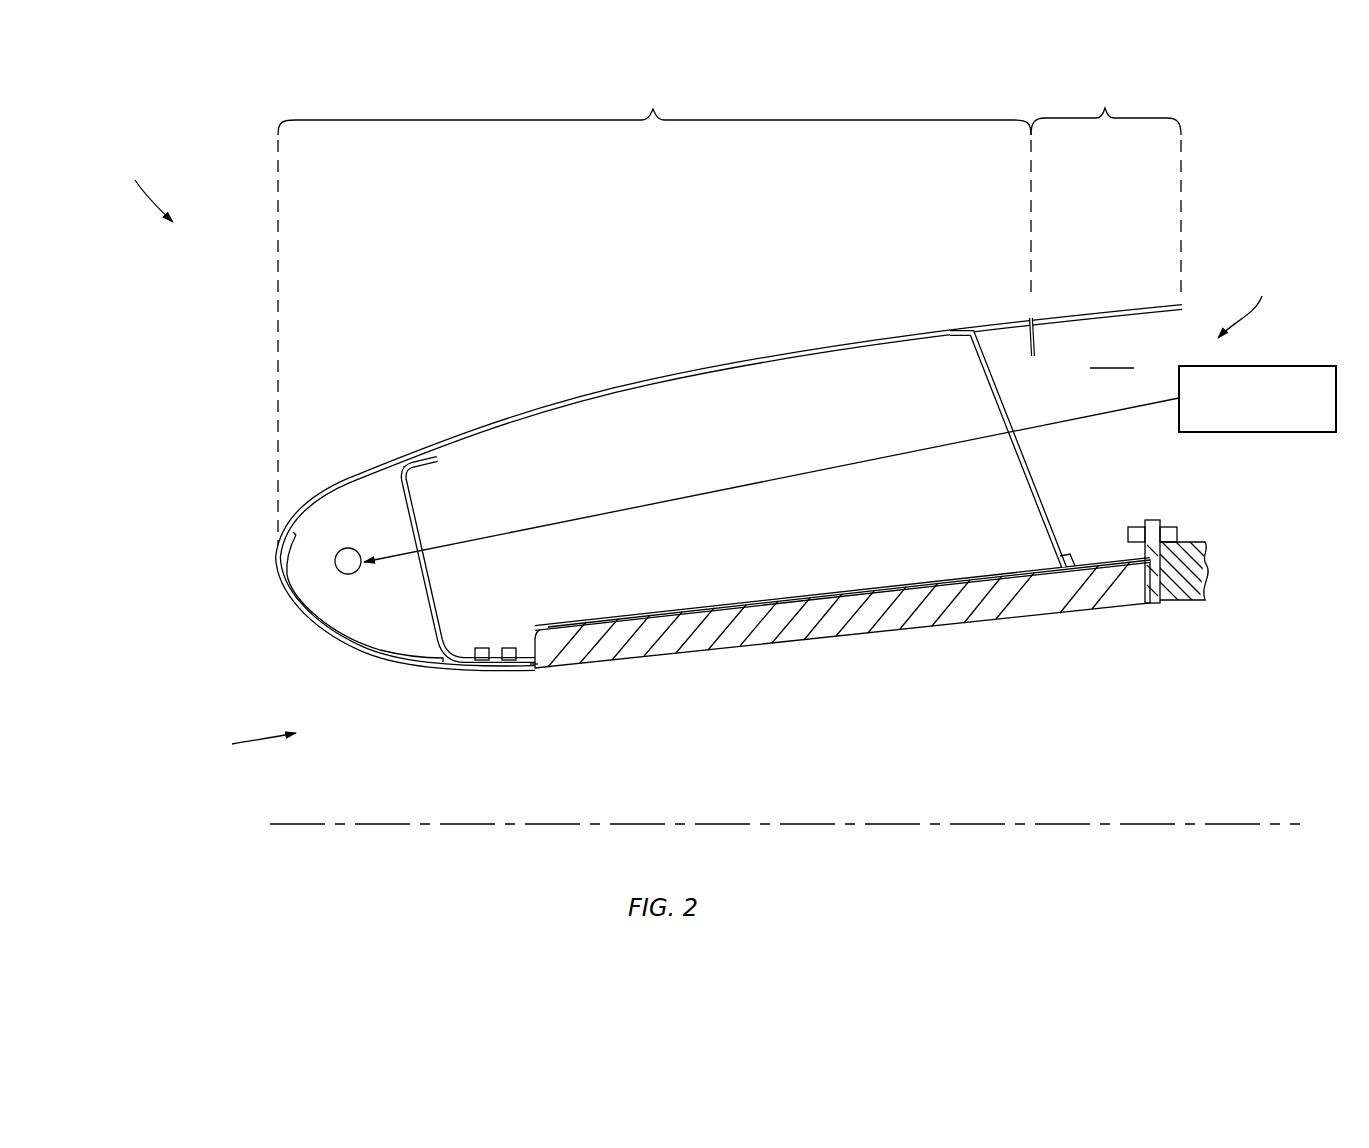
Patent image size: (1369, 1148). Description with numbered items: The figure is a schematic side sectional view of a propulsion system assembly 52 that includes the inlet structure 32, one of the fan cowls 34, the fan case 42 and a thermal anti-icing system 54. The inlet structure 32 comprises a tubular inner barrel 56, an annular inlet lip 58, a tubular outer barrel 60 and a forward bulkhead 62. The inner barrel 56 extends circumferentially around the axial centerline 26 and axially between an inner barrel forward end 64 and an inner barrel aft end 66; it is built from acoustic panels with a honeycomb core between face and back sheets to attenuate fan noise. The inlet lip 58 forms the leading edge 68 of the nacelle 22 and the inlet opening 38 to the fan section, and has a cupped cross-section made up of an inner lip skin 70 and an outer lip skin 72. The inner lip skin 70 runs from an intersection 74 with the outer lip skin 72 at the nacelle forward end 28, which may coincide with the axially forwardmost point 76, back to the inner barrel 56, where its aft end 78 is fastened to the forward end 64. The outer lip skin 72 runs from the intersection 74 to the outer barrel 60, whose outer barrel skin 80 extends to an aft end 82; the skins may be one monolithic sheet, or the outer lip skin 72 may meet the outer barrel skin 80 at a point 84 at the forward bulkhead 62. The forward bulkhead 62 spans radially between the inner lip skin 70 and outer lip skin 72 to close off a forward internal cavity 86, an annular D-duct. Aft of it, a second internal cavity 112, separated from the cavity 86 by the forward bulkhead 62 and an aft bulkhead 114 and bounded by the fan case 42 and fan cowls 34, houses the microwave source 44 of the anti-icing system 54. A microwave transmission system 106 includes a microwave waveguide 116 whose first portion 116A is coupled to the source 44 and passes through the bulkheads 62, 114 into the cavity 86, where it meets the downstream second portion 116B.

The nacelle 22 is at (700, 466).
The axial centerline 26 is at (1291, 831).
The nacelle forward end 28 is at (252, 572).
The inlet structure 32 is at (654, 313).
The fan cowl 34 is at (1106, 189).
The inlet opening 38 is at (246, 744).
The fan case 42 is at (1186, 616).
The microwave source 44 is at (1284, 366).
The propulsion system assembly 52 is at (136, 186).
The thermal anti-icing system 54 is at (1249, 301).
The inner barrel 56 is at (760, 656).
The inlet lip 58 is at (291, 628).
The outer barrel 60 is at (700, 487).
The forward bulkhead 62 is at (434, 601).
The inner barrel forward end 64 is at (493, 668).
The inner barrel aft end 66 is at (1166, 603).
The leading edge 68 is at (252, 572).
The inner lip skin 70 is at (365, 572).
The outer lip skin 72 is at (326, 486).
The intersection 74 is at (252, 572).
The axially forwardmost point 76 is at (252, 572).
The aft end of the inner lip skin 78 is at (538, 670).
The outer barrel skin 80 is at (700, 487).
The aft end of the outer barrel 82 is at (1033, 322).
The point 84 is at (429, 452).
The forward internal cavity 86 is at (376, 526).
The microwave transmission system 106 is at (771, 477).
The second internal cavity 112 is at (1090, 368).
The aft bulkhead 114 is at (1040, 494).
The microwave waveguide 116 is at (771, 477).
The first portion of the microwave waveguide 116A is at (792, 474).
The second portion of the microwave waveguide 116B is at (322, 572).